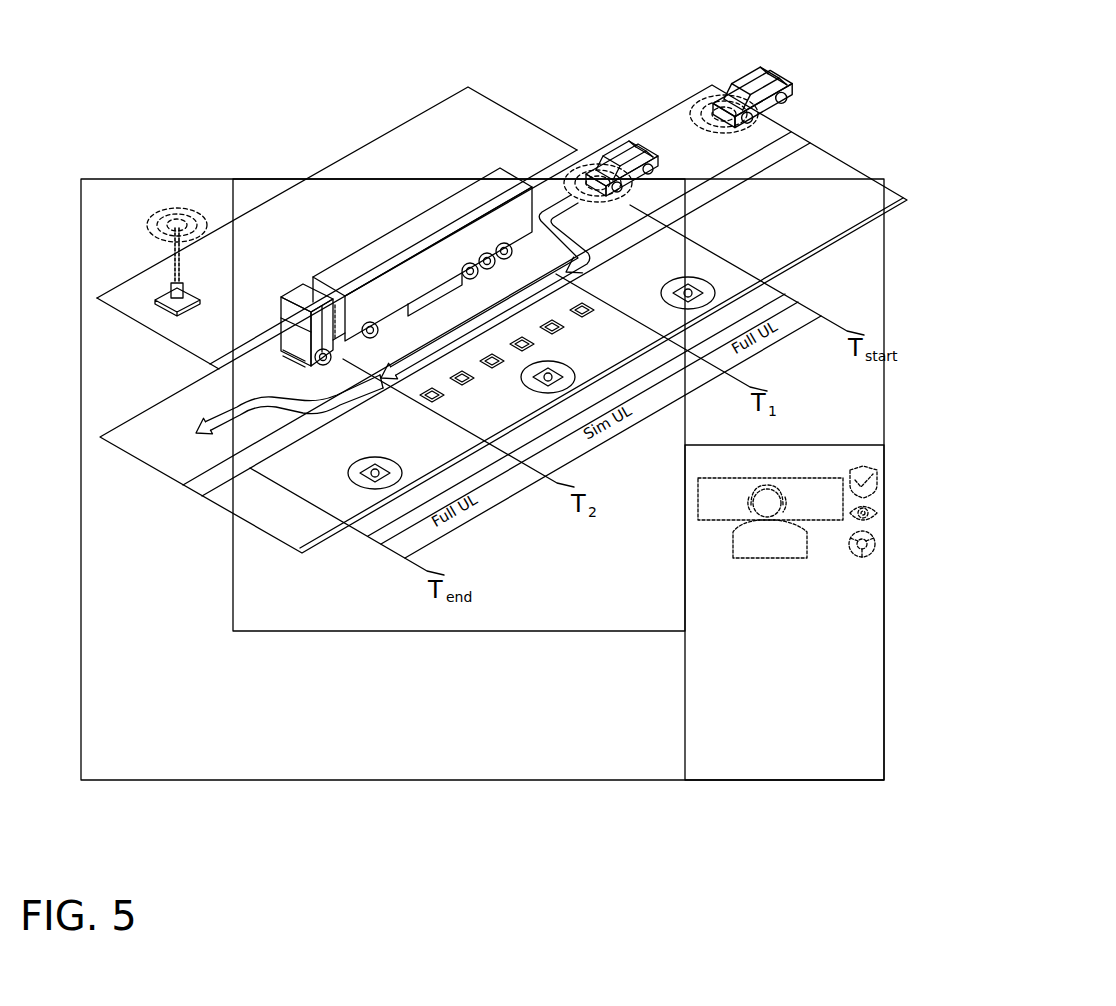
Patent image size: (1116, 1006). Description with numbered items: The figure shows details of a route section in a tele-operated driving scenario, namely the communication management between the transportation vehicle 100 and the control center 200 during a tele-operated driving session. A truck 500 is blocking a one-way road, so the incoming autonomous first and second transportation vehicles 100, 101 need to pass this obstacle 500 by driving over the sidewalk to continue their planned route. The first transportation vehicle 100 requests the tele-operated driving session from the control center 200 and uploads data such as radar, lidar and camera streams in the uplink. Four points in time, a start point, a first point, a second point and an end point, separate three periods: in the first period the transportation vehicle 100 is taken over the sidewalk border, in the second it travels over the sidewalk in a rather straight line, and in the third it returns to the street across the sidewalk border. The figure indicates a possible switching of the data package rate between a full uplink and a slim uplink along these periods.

The first transportation vehicle V1 100 is at (640, 134).
The second transportation vehicle V2 101 is at (762, 68).
The control center 200 is at (636, 780).
The truck 500 is at (383, 247).